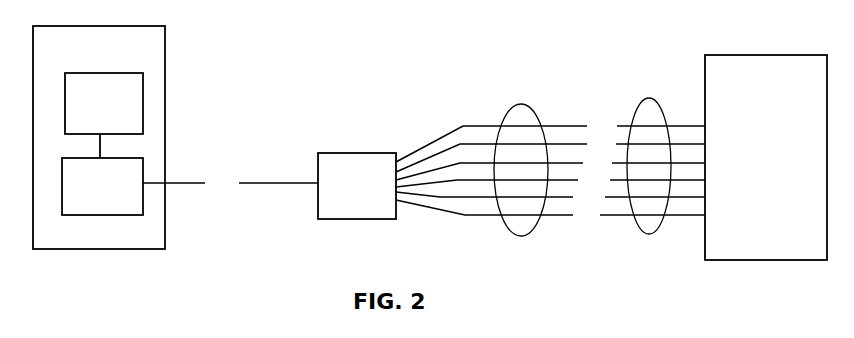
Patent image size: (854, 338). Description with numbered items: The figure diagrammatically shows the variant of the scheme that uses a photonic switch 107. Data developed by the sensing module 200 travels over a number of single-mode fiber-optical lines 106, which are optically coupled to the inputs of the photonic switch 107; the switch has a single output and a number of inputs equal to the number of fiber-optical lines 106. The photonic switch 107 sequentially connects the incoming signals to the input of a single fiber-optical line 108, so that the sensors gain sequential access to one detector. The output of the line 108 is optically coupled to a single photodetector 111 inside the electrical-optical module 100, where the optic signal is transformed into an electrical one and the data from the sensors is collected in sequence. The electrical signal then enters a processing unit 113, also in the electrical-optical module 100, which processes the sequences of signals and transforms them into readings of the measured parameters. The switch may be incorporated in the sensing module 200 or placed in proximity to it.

The electrical-optical module 100 is at (166, 164).
The processing unit 113 is at (143, 87).
The single photodetector 111 is at (143, 163).
The single fiber-optical line 108 is at (190, 183).
The photonic switch 107 is at (363, 153).
The single-mode fiber-optical lines 106 is at (520, 104).
The sensing module 200 is at (703, 83).